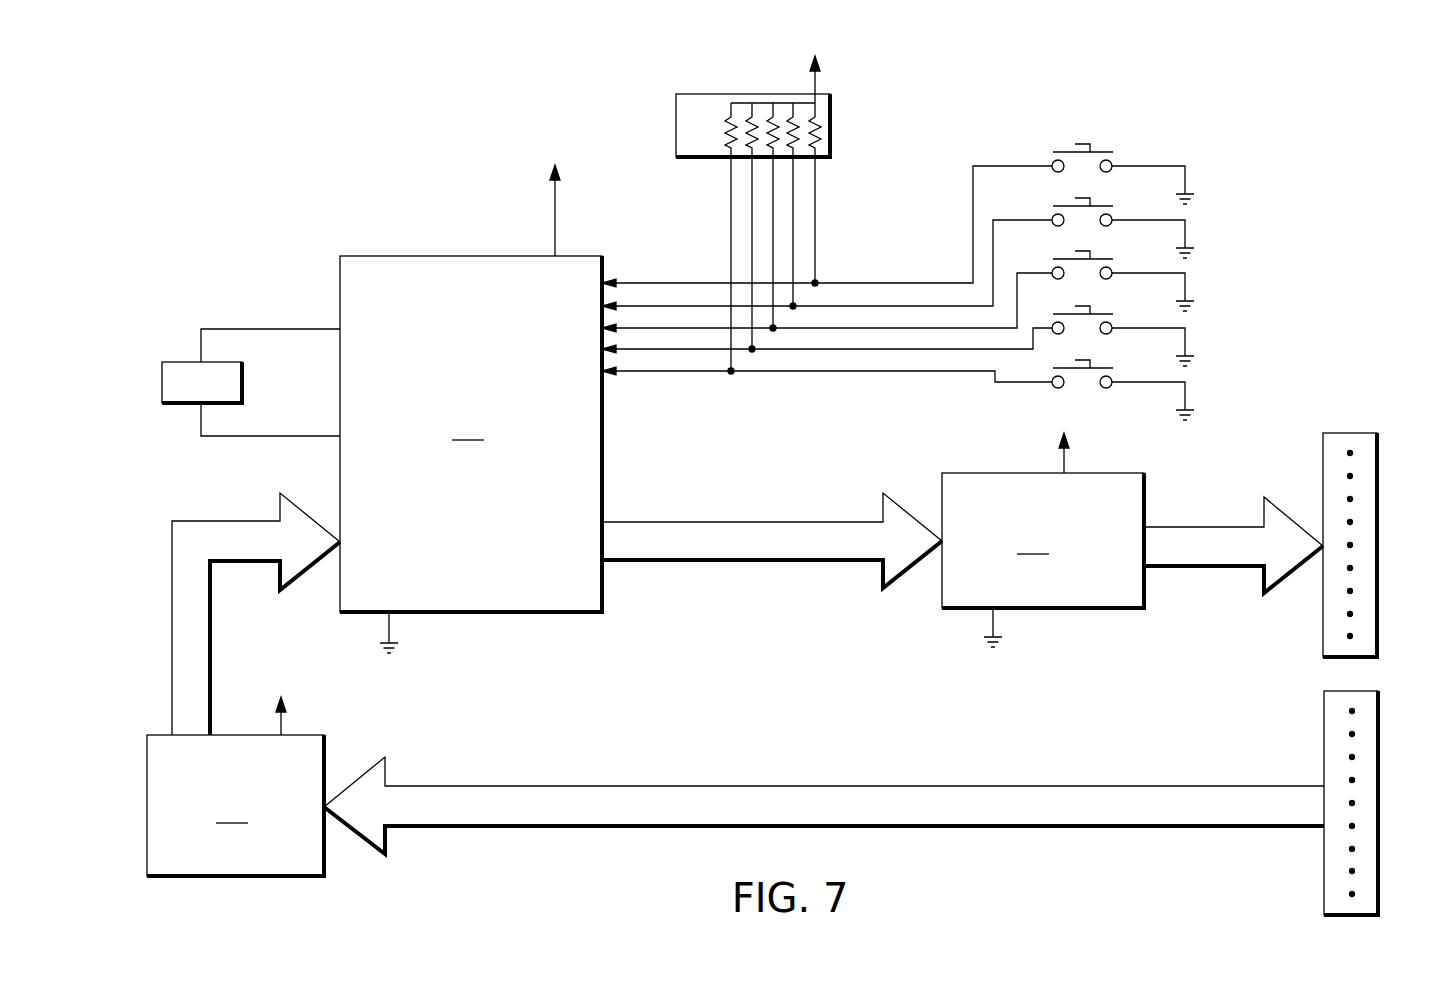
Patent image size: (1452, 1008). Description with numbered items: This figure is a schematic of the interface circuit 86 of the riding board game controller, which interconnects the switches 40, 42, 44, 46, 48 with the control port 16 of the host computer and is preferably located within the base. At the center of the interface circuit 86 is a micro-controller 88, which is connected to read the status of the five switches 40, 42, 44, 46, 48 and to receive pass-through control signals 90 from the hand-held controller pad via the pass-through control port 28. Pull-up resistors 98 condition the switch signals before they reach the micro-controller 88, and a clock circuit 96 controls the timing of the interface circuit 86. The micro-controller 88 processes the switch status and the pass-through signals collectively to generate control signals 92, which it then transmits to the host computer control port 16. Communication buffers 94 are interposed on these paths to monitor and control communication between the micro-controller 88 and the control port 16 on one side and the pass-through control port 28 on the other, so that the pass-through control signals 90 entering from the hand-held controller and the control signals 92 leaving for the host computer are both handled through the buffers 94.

The interface circuit 86 is at (443, 196).
The micro-controller 88 is at (478, 397).
The pull-up resistors 98 is at (692, 94).
The switch 40 is at (1060, 205).
The switch 42 is at (1090, 144).
The switch 44 is at (1058, 258).
The switch 46 is at (1103, 313).
The switch 48 is at (1057, 366).
The clock circuit 96 is at (170, 362).
The communication buffers 94 is at (645, 639).
The pass-through control signals 90 is at (172, 521).
The control signals 92 is at (1204, 527).
The control port 16 is at (1378, 470).
The pass-through control port 28 is at (1330, 716).